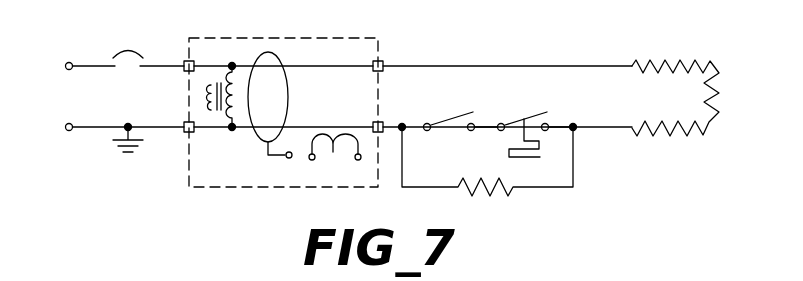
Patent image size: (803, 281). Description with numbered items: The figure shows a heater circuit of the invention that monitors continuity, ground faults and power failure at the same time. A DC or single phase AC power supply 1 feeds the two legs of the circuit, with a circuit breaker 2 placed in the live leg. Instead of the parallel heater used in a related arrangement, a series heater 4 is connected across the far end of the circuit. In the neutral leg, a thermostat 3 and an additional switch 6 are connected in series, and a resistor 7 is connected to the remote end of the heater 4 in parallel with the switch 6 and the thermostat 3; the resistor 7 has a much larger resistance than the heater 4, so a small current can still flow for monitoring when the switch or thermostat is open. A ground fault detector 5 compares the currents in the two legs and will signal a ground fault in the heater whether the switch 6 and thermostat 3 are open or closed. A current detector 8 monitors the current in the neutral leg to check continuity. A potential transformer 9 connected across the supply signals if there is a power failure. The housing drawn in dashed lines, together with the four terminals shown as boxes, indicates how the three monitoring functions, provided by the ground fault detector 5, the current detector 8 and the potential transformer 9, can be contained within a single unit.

The power supply 1 is at (76, 107).
The circuit breaker 2 is at (128, 51).
The thermostat 3 is at (524, 118).
The series heater 4 is at (668, 135).
The ground fault detector 5 is at (288, 100).
The switch 6 is at (452, 118).
The resistor 7 is at (466, 183).
The current detector 8 is at (335, 155).
The potential transformer 9 is at (228, 119).